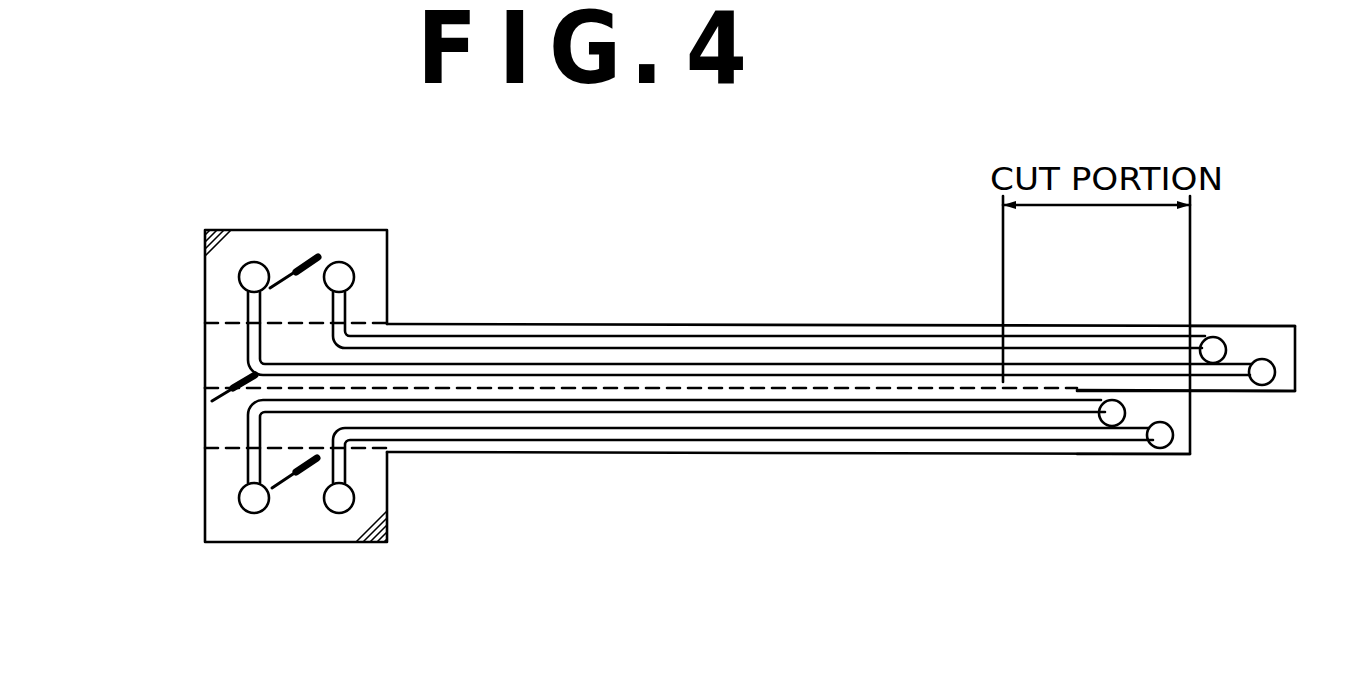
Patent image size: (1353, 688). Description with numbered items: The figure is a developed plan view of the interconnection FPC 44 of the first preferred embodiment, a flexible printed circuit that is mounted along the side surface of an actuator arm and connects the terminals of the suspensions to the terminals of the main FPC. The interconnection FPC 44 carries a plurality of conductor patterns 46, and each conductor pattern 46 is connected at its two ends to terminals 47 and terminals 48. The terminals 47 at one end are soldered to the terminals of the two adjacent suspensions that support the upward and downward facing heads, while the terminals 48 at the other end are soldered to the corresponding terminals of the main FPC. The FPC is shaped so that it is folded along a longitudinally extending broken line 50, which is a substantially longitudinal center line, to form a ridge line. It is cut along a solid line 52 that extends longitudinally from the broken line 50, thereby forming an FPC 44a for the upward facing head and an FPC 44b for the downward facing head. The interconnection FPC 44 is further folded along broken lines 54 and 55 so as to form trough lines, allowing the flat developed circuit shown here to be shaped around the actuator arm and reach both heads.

The interconnection FPC 44 is at (677, 325).
The FPC for the upward facing head 44a is at (1158, 360).
The FPC for the downward facing head 44b is at (1167, 410).
The conductor patterns 46 is at (825, 375).
The terminals 47 is at (1262, 358).
The terminals 48 is at (340, 263).
The broken line 50 is at (513, 387).
The solid line 52 is at (1078, 391).
The broken line 54 is at (366, 323).
The broken line 55 is at (363, 455).